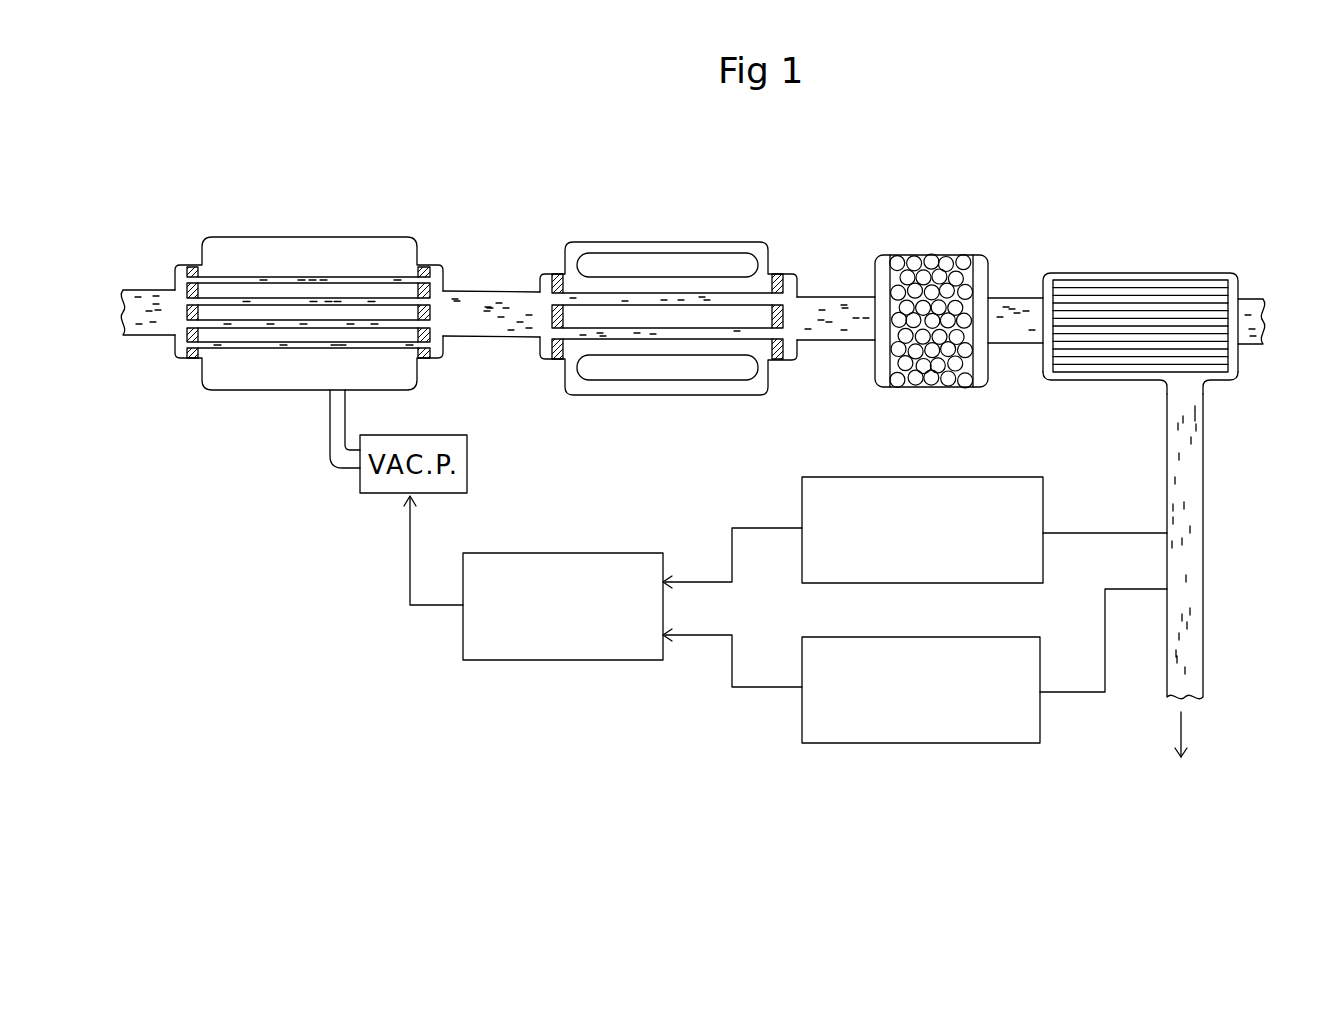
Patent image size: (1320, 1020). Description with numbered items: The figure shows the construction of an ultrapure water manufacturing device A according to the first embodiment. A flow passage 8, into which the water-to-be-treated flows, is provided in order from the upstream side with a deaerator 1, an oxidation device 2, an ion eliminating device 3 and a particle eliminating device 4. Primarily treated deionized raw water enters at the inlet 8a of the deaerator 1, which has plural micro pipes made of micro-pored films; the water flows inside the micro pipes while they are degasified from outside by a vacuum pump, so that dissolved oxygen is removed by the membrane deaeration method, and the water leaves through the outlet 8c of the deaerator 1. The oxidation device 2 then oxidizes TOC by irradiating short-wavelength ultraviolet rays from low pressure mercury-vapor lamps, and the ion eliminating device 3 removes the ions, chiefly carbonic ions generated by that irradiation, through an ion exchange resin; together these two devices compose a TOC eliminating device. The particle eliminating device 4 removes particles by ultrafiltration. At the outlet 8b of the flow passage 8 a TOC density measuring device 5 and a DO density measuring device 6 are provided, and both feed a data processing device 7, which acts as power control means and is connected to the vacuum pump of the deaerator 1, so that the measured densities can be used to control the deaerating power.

The deaerator 1 is at (338, 238).
The oxidation device 2 is at (697, 243).
The ion eliminating device 3 is at (948, 255).
The particle eliminating device 4 is at (1138, 273).
The TOC density measuring device 5 is at (802, 566).
The DO density measuring device 6 is at (802, 735).
The data processing device 7 is at (515, 660).
The flow passage 8 is at (108, 317).
The inlet 8a is at (148, 288).
The outlet 8b is at (1203, 483).
The outlet of the deaerator 8c is at (500, 292).
The ultrapure water manufacturing device A is at (1212, 187).